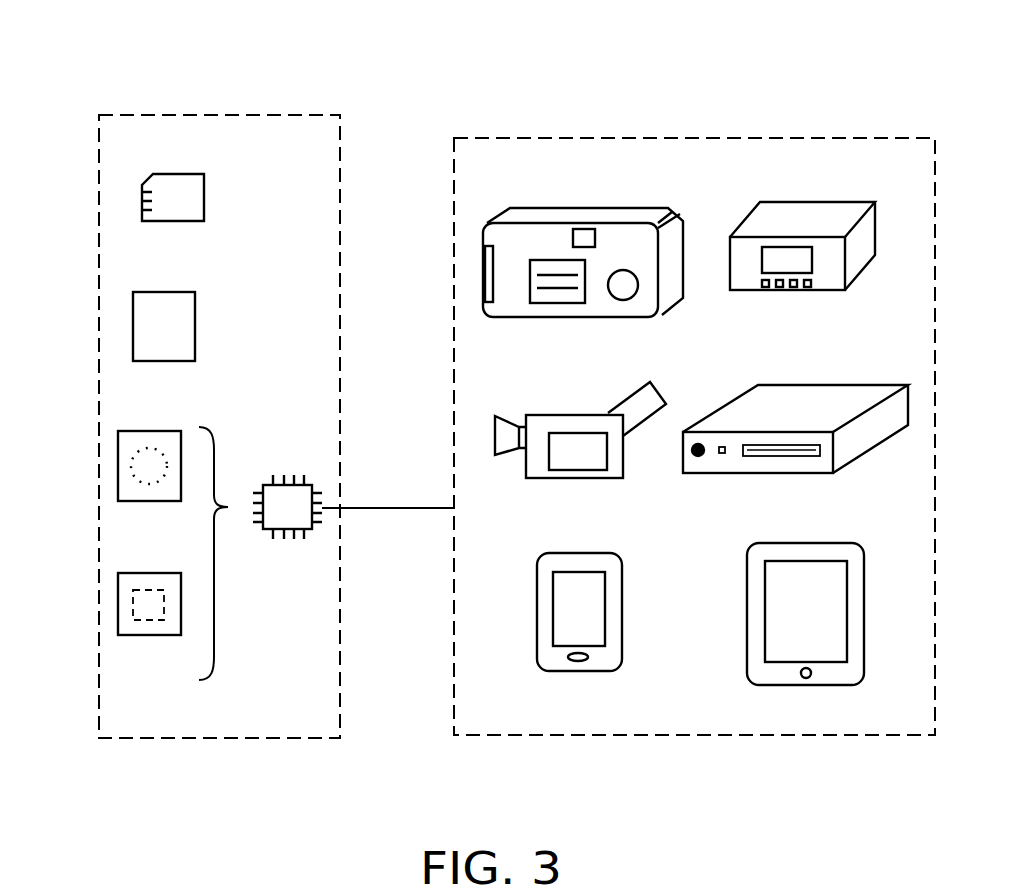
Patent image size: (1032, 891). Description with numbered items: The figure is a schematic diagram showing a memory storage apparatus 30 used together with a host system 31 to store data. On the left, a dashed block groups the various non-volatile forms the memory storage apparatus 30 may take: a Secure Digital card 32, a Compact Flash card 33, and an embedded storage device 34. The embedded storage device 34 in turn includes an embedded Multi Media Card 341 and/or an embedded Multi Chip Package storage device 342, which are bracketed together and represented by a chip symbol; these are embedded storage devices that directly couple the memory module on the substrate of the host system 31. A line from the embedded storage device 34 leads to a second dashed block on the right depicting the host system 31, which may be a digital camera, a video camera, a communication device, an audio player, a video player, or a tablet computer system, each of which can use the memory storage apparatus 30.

The memory storage apparatus 30 is at (209, 113).
The host system 31 is at (617, 135).
The Secure Digital (SD) card 32 is at (142, 203).
The Compact Flash (CF) card 33 is at (133, 328).
The embedded storage device 34 is at (289, 482).
The embedded Multi Media Card (eMMC) 341 is at (118, 467).
The embedded Multi Chip Package (eMCP) storage device 342 is at (118, 605).